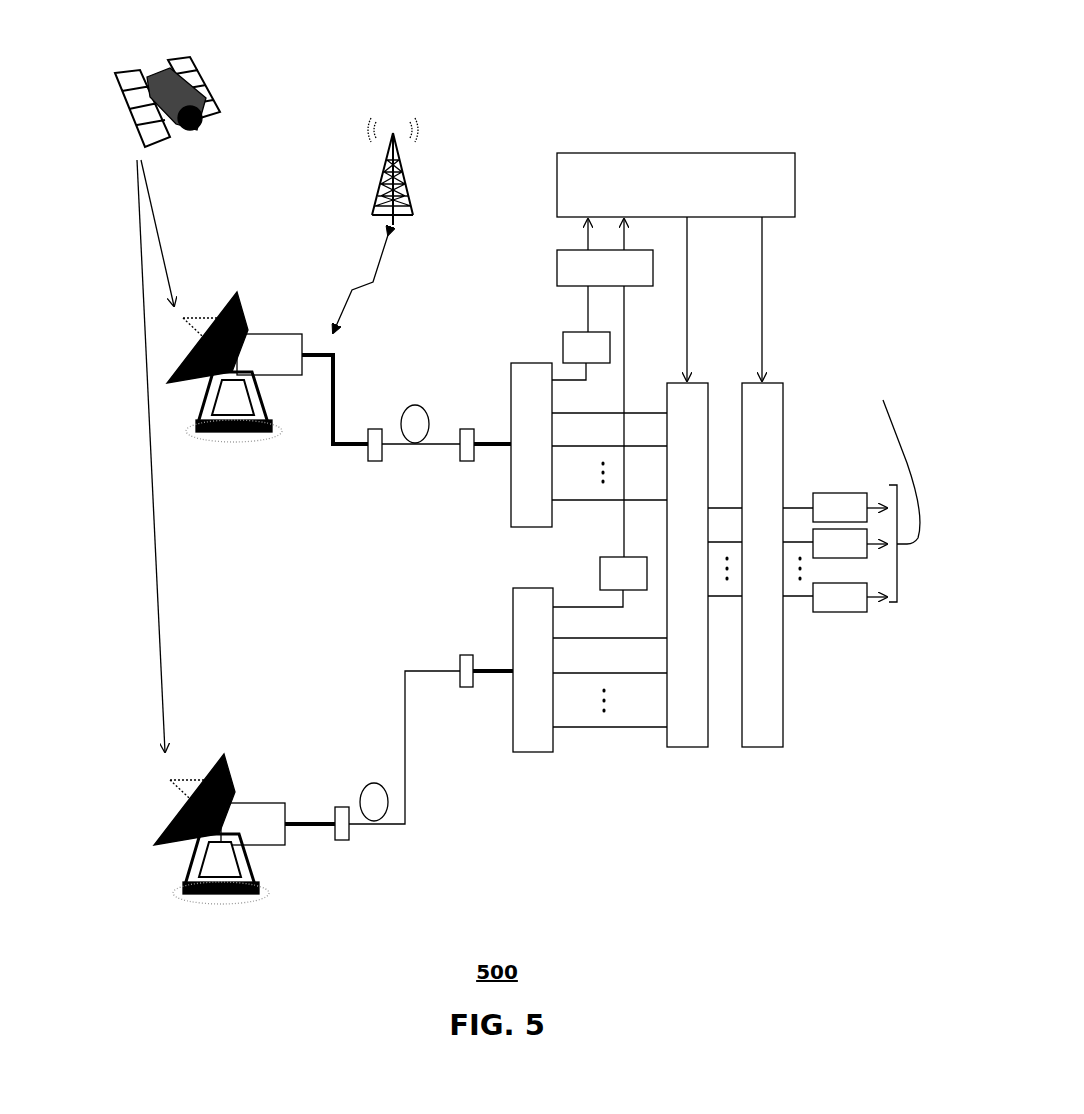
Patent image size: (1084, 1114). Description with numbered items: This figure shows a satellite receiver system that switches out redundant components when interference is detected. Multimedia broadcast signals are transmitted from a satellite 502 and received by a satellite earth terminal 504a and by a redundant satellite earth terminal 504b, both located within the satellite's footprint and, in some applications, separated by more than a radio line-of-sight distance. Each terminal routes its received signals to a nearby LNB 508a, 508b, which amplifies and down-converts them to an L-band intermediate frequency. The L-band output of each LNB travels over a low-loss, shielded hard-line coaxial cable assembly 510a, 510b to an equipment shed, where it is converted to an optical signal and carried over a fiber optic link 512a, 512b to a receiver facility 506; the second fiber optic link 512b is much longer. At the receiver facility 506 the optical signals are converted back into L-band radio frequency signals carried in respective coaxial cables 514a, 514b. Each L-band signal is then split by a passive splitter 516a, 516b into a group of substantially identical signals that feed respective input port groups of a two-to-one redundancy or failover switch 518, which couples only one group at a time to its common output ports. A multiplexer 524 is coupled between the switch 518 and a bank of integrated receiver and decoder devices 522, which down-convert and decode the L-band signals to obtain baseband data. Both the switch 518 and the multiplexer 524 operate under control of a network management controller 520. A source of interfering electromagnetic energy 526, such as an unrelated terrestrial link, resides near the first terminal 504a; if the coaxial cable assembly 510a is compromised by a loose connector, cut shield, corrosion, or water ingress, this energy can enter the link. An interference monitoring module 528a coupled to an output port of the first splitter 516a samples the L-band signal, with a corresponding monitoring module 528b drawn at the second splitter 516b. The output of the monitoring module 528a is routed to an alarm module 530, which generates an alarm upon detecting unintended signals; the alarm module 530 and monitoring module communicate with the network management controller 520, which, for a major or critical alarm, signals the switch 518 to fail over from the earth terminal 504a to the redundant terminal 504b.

The satellite 502 is at (185, 52).
The satellite earth terminal 504a is at (214, 430).
The redundant satellite earth terminal 504b is at (200, 892).
The receiver facility 506 is at (714, 54).
The LNB 508a is at (256, 334).
The LNB 508b is at (243, 803).
The hard-line coaxial cable assembly 510a is at (338, 412).
The hard-line coaxial cable assembly 510b is at (300, 817).
The fiber optic link 512a is at (438, 462).
The second fiber optic link 512b is at (388, 838).
The coaxial cable 514a is at (500, 438).
The second receiver connector 514b is at (493, 663).
The passive splitter device 516a is at (515, 362).
The passive splitter device 516b is at (530, 587).
The switch 518 is at (686, 749).
The network management controller 520 is at (722, 153).
The integrated receiver and decoder device 522 is at (852, 630).
The multiplexer 524 is at (762, 749).
The source of interfering electromagnetic energy 526 is at (405, 175).
The interference monitoring module 528a is at (577, 332).
The second detector Db 528b is at (613, 557).
The alarm module 530 is at (557, 265).